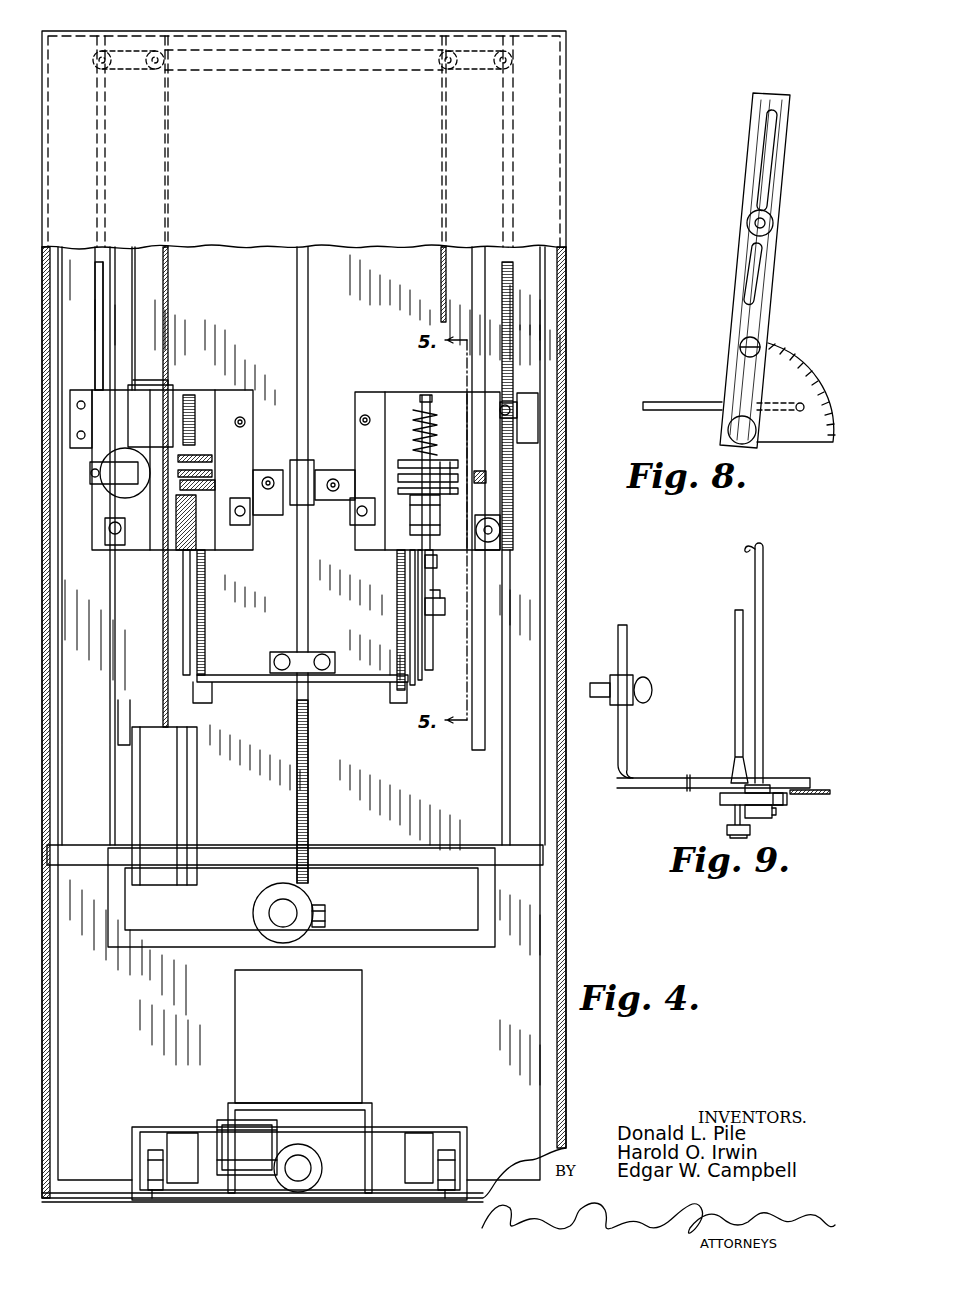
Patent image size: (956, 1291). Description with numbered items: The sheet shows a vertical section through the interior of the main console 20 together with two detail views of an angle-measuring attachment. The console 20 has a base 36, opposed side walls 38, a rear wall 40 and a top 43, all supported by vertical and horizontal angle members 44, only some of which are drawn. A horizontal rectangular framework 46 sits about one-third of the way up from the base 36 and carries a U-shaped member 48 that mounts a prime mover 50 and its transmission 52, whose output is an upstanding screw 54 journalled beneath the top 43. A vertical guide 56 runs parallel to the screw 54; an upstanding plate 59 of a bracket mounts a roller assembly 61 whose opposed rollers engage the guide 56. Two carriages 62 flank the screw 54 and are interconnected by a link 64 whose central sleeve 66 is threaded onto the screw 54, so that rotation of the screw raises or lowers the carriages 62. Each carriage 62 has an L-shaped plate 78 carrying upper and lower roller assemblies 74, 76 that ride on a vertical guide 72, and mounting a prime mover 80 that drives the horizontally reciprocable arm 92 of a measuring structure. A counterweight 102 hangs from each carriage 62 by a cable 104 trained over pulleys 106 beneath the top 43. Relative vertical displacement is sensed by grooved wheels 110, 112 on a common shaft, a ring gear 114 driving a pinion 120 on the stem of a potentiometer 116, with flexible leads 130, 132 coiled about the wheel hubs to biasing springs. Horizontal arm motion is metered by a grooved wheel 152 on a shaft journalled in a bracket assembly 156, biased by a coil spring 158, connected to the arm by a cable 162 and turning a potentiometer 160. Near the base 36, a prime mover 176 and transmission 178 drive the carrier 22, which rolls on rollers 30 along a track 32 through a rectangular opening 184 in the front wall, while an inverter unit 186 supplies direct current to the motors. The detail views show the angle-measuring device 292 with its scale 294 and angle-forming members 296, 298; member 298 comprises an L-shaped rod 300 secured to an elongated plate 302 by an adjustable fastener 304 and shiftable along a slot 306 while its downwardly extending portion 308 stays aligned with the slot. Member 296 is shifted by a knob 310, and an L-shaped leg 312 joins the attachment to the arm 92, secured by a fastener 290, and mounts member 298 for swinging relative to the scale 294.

In FIG. 4, the main console 20 is at (576, 107).
In FIG. 4, the carrier 22 is at (444, 1126).
In FIG. 4, the rollers 30 is at (146, 1156).
In FIG. 4, the track 32 is at (154, 1196).
In FIG. 4, the base 36 is at (280, 1202).
In FIG. 4, the side walls 38 is at (46, 380).
In FIG. 4, the rear wall 40 is at (546, 186).
In FIG. 4, the top 43 is at (178, 31).
In FIG. 4, the angle members 44 is at (560, 1102).
In FIG. 4, the rectangular framework 46 is at (220, 846).
In FIG. 4, the U-shaped member 48 is at (393, 948).
In FIG. 4, the prime mover 50 is at (254, 912).
In FIG. 4, the transmission 52 is at (326, 912).
In FIG. 4, the screw 54 is at (310, 762).
In FIG. 4, the vertical guide 56 is at (310, 620).
In FIG. 4, the upstanding plate 59 is at (250, 682).
In FIG. 4, the roller assembly 61 is at (278, 652).
In FIG. 4, the carriages 62 is at (236, 392).
In FIG. 4, the link 64 is at (268, 512).
In FIG. 4, the sleeve 66 is at (320, 468).
In FIG. 4, the vertical guide 72 is at (100, 262).
In FIG. 4, the upper roller assembly 74 is at (95, 388).
In FIG. 4, the lower roller assembly 76 is at (96, 542).
In FIG. 4, the L-shaped plate 78 is at (152, 550).
In FIG. 4, the prime mover 80 is at (150, 385).
In FIG. 4, the arm 92 is at (486, 483).
In FIG. 9, the arm 92 is at (600, 684).
In FIG. 4, the counterweight 102 is at (198, 778).
In FIG. 4, the cable 104 is at (440, 166).
In FIG. 4, the pulleys 106 is at (135, 72).
In FIG. 4, the grooved wheel 110 is at (192, 620).
In FIG. 4, the grooved wheel 112 is at (408, 676).
In FIG. 4, the ring gear 114 is at (432, 648).
In FIG. 4, the potentiometer 116 is at (402, 574).
In FIG. 4, the pinion 120 is at (437, 558).
In FIG. 4, the flexible lead 130 is at (398, 606).
In FIG. 4, the flexible lead 132 is at (206, 598).
In FIG. 4, the grooved wheel 152 is at (208, 456).
In FIG. 4, the bracket assembly 156 is at (218, 552).
In FIG. 4, the coil spring 158 is at (200, 490).
In FIG. 4, the potentiometer 160 is at (186, 400).
In FIG. 4, the cable 162 is at (213, 480).
In FIG. 4, the prime mover 176 is at (222, 1118).
In FIG. 4, the transmission 178 is at (322, 1166).
In FIG. 4, the rectangular opening 184 is at (134, 1130).
In FIG. 4, the inverter unit 186 is at (363, 1052).
In FIG. 9, the fastener 290 is at (650, 683).
In FIG. 8, the angle-measuring device 292 is at (770, 456).
In FIG. 9, the angle-measuring device 292 is at (706, 805).
In FIG. 8, the scale 294 is at (792, 358).
In FIG. 9, the scale 294 is at (828, 790).
In FIG. 9, the angle-forming member 296 is at (737, 692).
In FIG. 8, the angle-forming member 298 is at (797, 179).
In FIG. 9, the angle-forming member 298 is at (780, 761).
In FIG. 9, the L-shaped rod 300 is at (765, 620).
In FIG. 8, the elongated plate 302 is at (775, 302).
In FIG. 9, the elongated plate 302 is at (788, 802).
In FIG. 8, the adjustable fastener 304 is at (750, 226).
In FIG. 9, the adjustable fastener 304 is at (776, 816).
In FIG. 8, the slot 306 is at (760, 172).
In FIG. 8, the downwardly extending portion 308 is at (756, 270).
In FIG. 9, the downwardly extending portion 308 is at (747, 546).
In FIG. 8, the knob 310 is at (735, 430).
In FIG. 9, the knob 310 is at (725, 828).
In FIG. 8, the L-shaped leg 312 is at (685, 402).
In FIG. 9, the L-shaped leg 312 is at (628, 750).